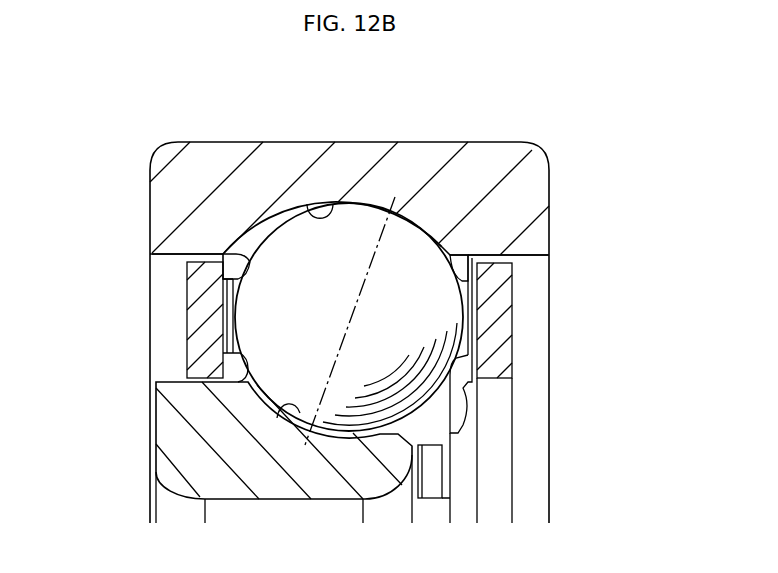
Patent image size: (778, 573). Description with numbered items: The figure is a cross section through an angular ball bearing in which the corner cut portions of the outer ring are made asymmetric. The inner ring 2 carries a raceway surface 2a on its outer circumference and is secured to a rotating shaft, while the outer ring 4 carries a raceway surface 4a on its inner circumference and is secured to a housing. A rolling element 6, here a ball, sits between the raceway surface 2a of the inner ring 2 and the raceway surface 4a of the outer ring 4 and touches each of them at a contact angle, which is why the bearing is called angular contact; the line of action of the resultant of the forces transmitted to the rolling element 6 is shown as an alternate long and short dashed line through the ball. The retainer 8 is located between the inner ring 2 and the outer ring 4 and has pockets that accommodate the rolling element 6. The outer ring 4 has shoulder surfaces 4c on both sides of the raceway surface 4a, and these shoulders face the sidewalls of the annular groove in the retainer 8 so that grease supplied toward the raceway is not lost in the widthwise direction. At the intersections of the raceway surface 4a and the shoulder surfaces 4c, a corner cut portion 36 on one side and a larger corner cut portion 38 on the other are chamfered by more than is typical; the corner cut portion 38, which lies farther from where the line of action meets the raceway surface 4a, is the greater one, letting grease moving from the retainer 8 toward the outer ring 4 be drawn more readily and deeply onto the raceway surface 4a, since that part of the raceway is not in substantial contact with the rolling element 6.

The outer ring 4 is at (376, 150).
The raceway surface 4a is at (320, 215).
The shoulder surface 4c is at (175, 254).
The retainer 8 is at (501, 322).
The corner cut portion 38 is at (244, 255).
The corner cut portion 36 is at (452, 260).
The rolling element 6 is at (329, 334).
The inner ring 2 is at (174, 433).
The raceway surface 2a is at (283, 408).